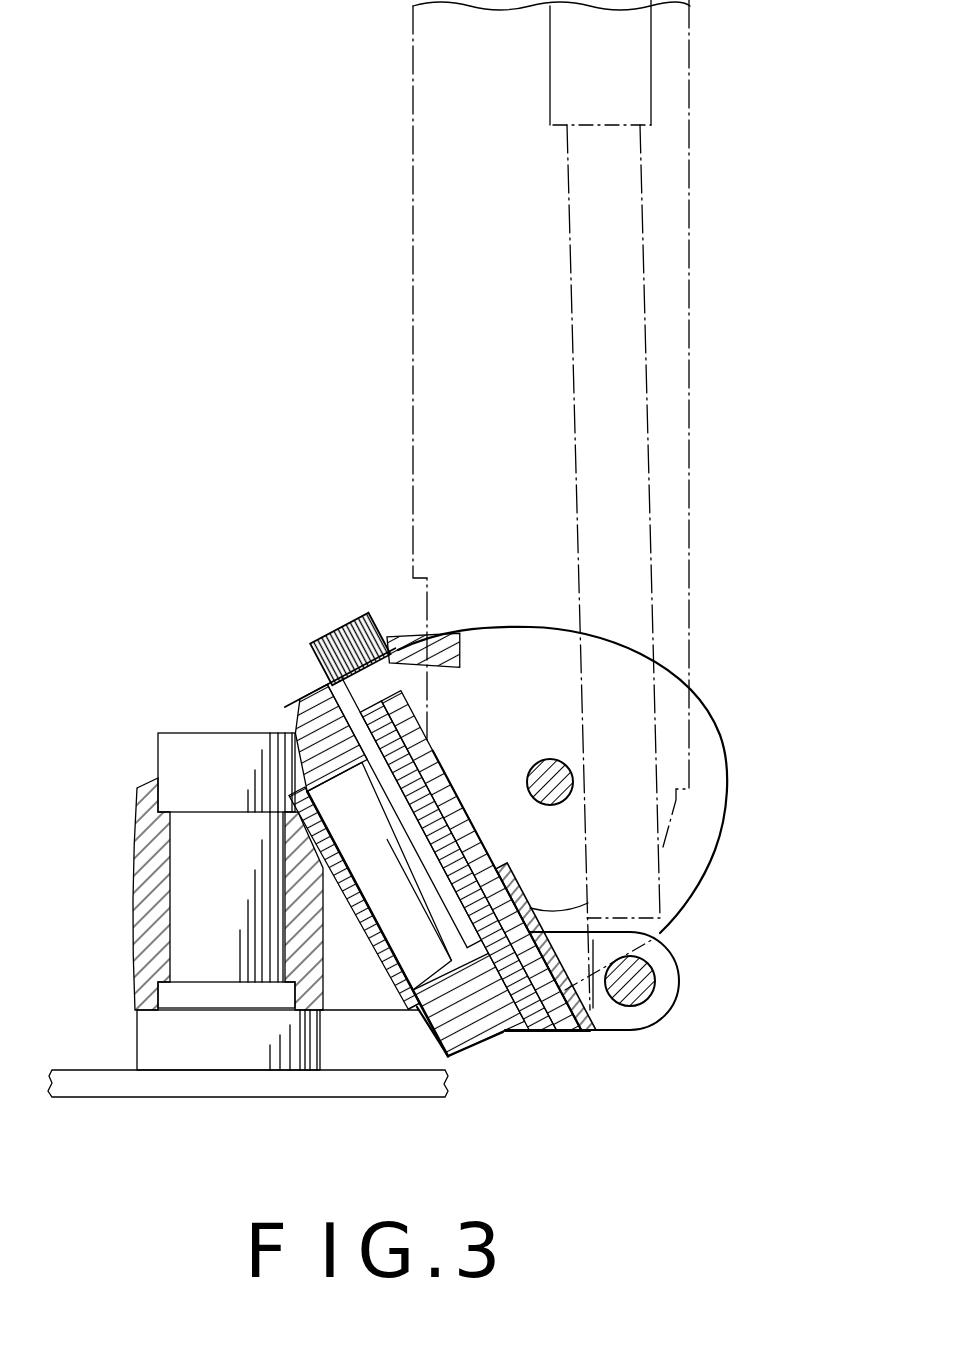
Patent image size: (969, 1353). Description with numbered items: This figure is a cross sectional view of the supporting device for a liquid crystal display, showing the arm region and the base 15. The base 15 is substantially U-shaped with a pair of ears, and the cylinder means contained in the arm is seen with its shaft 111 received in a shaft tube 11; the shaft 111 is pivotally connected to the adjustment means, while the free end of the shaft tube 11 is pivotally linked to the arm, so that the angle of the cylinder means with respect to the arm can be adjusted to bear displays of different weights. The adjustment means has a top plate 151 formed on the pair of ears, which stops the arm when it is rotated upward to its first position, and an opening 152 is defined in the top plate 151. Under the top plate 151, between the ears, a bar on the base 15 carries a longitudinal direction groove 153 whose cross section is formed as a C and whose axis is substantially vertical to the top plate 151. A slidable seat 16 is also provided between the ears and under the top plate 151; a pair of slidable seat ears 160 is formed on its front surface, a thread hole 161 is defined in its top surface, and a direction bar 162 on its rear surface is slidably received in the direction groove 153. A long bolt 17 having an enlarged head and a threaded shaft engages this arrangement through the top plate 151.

The shaft tube 11 is at (640, 70).
The shaft 111 is at (647, 630).
The base 15 is at (140, 815).
The top plate 151 is at (310, 703).
The opening 152 is at (368, 655).
The direction groove 153 is at (410, 952).
The slidable seat 16 is at (513, 1036).
The slidable seat ears 160 is at (632, 1036).
The thread hole 161 is at (541, 965).
The direction bar 162 is at (466, 1040).
The long bolt 17 is at (313, 644).